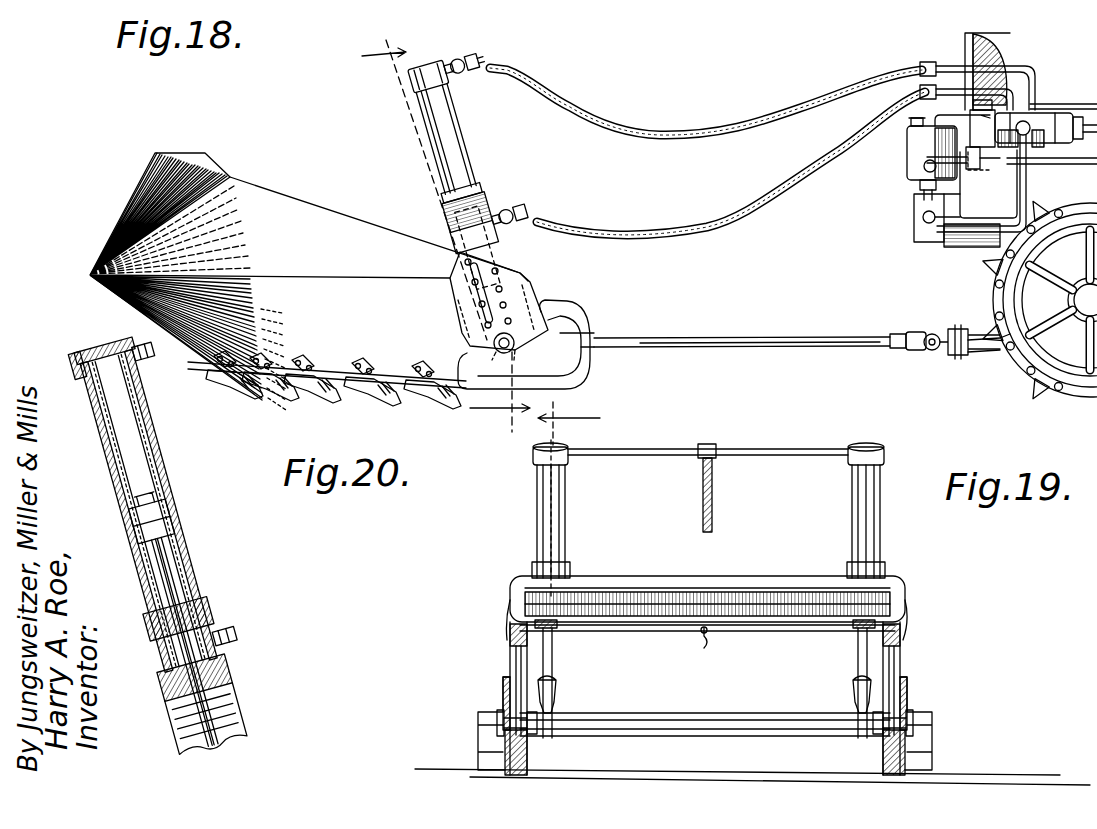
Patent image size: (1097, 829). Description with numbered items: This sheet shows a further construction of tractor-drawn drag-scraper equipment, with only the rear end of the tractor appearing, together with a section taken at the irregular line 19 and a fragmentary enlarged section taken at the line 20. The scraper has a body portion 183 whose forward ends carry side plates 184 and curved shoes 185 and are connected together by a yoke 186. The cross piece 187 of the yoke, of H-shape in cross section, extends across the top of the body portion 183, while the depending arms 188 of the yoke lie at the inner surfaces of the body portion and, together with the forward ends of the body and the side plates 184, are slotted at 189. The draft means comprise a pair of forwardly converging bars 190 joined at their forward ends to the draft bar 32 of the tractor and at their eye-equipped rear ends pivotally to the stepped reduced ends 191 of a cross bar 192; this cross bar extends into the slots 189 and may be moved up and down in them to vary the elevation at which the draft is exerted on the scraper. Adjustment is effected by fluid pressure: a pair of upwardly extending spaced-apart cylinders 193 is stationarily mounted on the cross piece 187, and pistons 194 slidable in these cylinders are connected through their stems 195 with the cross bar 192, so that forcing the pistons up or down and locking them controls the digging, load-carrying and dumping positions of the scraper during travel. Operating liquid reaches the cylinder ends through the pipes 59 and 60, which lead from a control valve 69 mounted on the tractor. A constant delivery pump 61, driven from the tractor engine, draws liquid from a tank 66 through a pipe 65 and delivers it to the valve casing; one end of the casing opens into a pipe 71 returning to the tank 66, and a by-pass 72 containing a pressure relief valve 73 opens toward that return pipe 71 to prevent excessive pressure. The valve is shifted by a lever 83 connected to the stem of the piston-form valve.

In FIG. 18, the body portion 183 is at (100, 200).
In FIG. 18, the cylinders 193 is at (480, 134).
In FIG. 20, the cylinders 193 is at (190, 435).
In FIG. 19, the cylinders 193 is at (527, 528).
In FIG. 18, the side plates 184 is at (552, 268).
In FIG. 19, the side plates 184 is at (482, 614).
In FIG. 18, the slots 189 is at (496, 289).
In FIG. 19, the slots 189 is at (485, 650).
In FIG. 18, the curved shoes 185 is at (625, 376).
In FIG. 19, the curved shoes 185 is at (470, 742).
In FIG. 18, the forwardly converging bars 190 is at (805, 319).
In FIG. 19, the forwardly converging bars 190 is at (583, 762).
In FIG. 18, the draft bar 32 is at (986, 338).
In FIG. 18, the pipe 60 is at (643, 129).
In FIG. 19, the pipe 60 is at (715, 497).
In FIG. 18, the pipe 59 is at (694, 229).
In FIG. 19, the pipe 59 is at (704, 650).
In FIG. 18, the pipe 71 is at (933, 128).
In FIG. 18, the tank 66 is at (906, 161).
In FIG. 18, the pipe 65 is at (918, 193).
In FIG. 18, the pump 61 is at (915, 231).
In FIG. 18, the pressure relief valve 73 is at (981, 183).
In FIG. 18, the by-pass 72 is at (978, 166).
In FIG. 18, the control valve 69 is at (1042, 113).
In FIG. 18, the lever 83 is at (1052, 120).
In FIG. 18, the irregular line 19— 19 is at (446, 236).
In FIG. 18, the line 20 is at (569, 418).
In FIG. 20, the piston 194 is at (210, 498).
In FIG. 20, the stems 195 is at (258, 625).
In FIG. 19, the stems 195 is at (601, 672).
In FIG. 20, the yoke 186 is at (225, 604).
In FIG. 19, the yoke 186 is at (660, 551).
In FIG. 20, the depending arms 188 is at (278, 701).
In FIG. 19, the depending arms 188 is at (593, 650).
In FIG. 19, the cross piece 187 is at (753, 551).
In FIG. 19, the cross bar 192 is at (708, 707).
In FIG. 19, the stepped reduced ends 191 is at (596, 705).